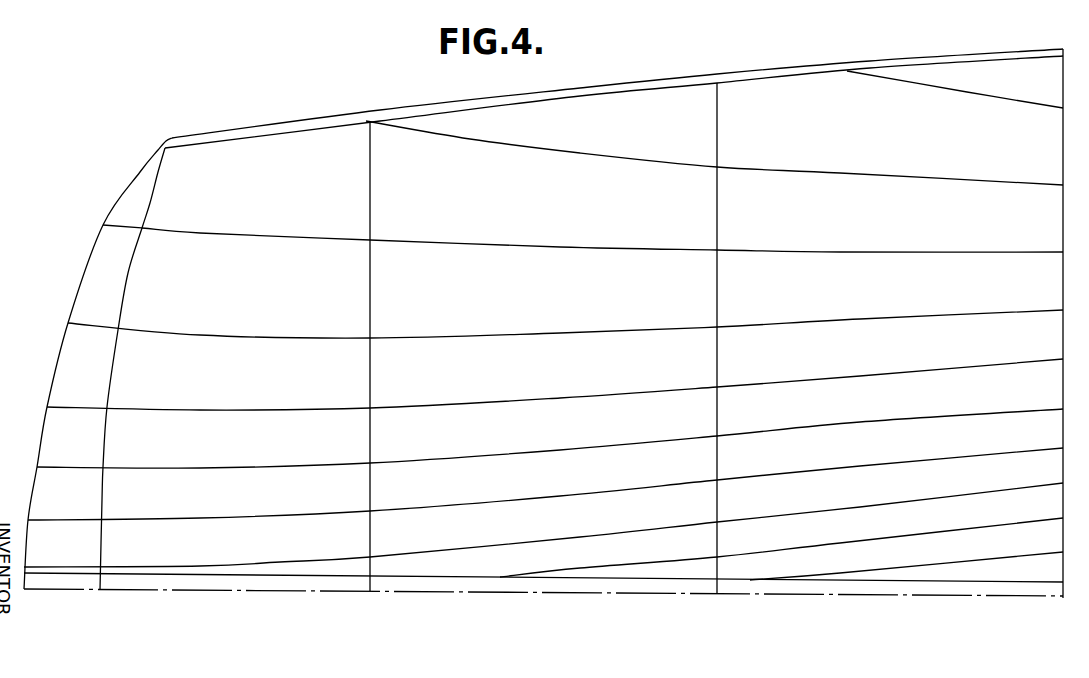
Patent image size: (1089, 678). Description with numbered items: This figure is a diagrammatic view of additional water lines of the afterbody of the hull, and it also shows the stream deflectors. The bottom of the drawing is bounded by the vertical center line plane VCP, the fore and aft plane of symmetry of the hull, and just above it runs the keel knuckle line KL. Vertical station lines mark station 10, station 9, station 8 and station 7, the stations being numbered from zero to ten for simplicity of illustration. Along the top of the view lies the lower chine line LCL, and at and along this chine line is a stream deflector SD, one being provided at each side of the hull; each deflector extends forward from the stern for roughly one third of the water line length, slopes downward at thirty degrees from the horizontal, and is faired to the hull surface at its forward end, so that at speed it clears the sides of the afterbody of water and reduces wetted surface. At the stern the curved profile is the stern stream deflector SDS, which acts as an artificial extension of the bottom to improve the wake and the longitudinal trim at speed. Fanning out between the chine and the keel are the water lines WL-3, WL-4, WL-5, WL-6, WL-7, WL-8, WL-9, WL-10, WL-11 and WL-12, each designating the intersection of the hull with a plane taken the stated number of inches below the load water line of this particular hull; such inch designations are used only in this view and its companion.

The lower chine line LCL is at (941, 60).
The stream deflector SD is at (629, 84).
The stern stream deflector SDS is at (128, 273).
The keel knuckle line KL is at (310, 572).
The vertical center line plane VCP is at (490, 592).
The water line 3 inches below load water line WL-3 is at (973, 79).
The water line 4 inches below load water line WL-4 is at (955, 180).
The water line 5 inches below load water line WL-5 is at (955, 252).
The water line 6 inches below load water line WL-6 is at (955, 316).
The water line 7 inches below load water line WL-7 is at (955, 368).
The water line 8 inches below load water line WL-8 is at (953, 412).
The water line 9 inches below load water line WL-9 is at (952, 458).
The water line 10 inches below load water line WL-10 is at (952, 494).
The water line 11 inches below load water line WL-11 is at (952, 533).
The water line 12 inches below load water line WL-12 is at (952, 566).
The station 10 is at (26, 606).
The station 9 is at (368, 370).
The station 8 is at (716, 351).
The station 7 is at (1063, 336).